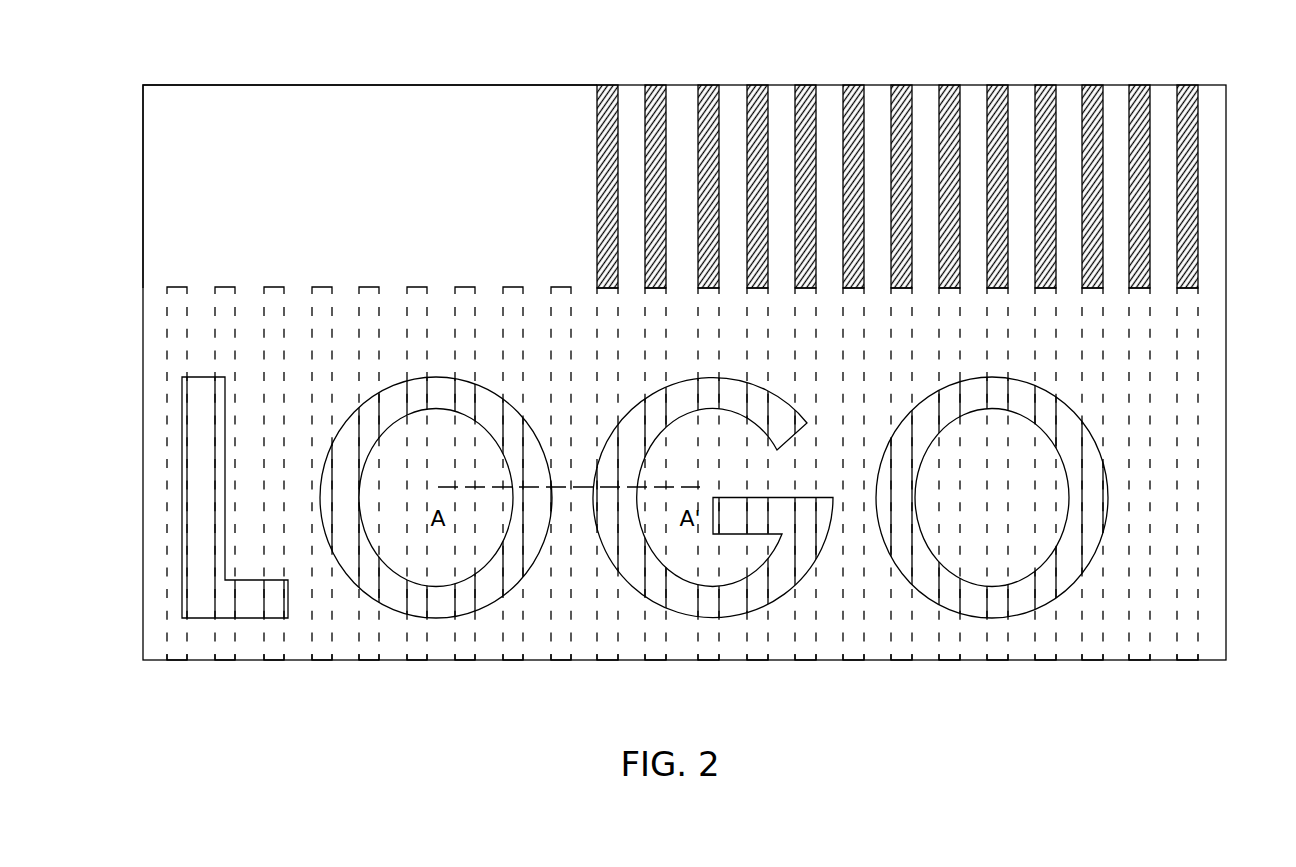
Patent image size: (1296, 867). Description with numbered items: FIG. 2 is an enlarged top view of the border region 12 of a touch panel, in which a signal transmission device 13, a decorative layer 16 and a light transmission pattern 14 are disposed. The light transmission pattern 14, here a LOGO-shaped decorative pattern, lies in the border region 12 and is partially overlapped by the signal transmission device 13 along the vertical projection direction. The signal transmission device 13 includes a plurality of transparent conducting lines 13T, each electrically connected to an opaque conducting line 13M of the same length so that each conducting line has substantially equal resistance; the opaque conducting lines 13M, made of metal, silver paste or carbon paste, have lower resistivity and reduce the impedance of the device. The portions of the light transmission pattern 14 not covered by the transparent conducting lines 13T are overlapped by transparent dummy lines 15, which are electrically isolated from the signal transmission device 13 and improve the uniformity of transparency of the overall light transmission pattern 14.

The border region 12 is at (278, 67).
The signal transmission device 13 is at (937, 154).
The opaque conducting line 13M is at (1227, 186).
The transparent conducting line 13T is at (1191, 682).
The light transmission pattern 14 is at (930, 408).
The transparent dummy line 15 is at (565, 682).
The decorative layer 16 is at (366, 133).